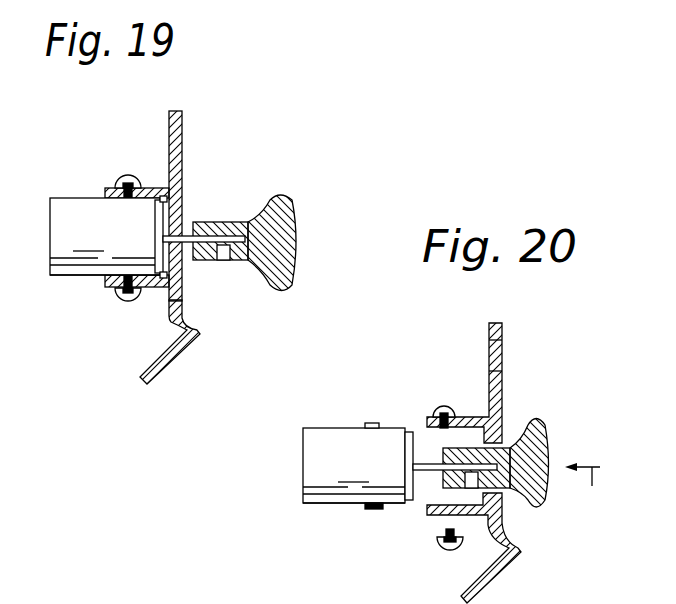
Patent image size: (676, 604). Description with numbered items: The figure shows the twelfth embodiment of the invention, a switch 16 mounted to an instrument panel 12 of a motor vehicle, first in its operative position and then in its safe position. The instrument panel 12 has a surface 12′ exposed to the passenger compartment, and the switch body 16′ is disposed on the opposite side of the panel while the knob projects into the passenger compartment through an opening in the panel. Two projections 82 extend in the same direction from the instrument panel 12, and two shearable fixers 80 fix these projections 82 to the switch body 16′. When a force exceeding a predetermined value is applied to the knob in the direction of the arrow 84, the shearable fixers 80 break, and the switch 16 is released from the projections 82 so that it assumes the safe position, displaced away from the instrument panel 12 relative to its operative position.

In FIG. 19, the instrument panel 12 is at (175, 106).
In FIG. 20, the instrument panel 12 is at (496, 318).
In FIG. 19, the surface 12′ is at (184, 140).
In FIG. 20, the surface 12′ is at (504, 371).
In FIG. 19, the switch 16 is at (108, 237).
In FIG. 20, the switch 16 is at (358, 466).
In FIG. 19, the switch body 16′ is at (65, 278).
In FIG. 20, the switch body 16′ is at (330, 507).
In FIG. 19, the shearable fixers 80 is at (134, 180).
In FIG. 20, the shearable fixers 80 is at (446, 408).
In FIG. 19, the projections 82 is at (156, 301).
In FIG. 20, the projections 82 is at (471, 416).
In FIG. 20, the arrow 84 is at (590, 494).